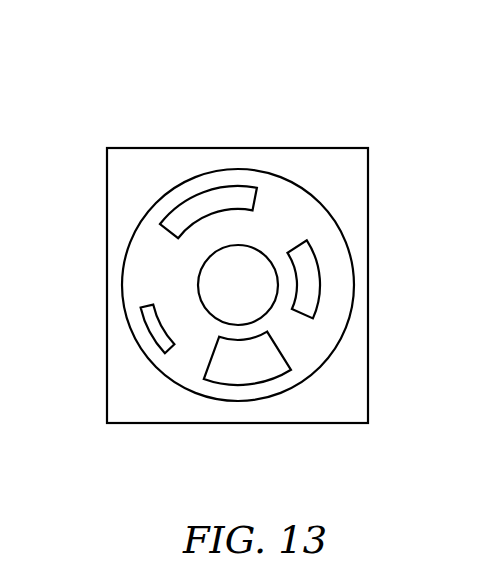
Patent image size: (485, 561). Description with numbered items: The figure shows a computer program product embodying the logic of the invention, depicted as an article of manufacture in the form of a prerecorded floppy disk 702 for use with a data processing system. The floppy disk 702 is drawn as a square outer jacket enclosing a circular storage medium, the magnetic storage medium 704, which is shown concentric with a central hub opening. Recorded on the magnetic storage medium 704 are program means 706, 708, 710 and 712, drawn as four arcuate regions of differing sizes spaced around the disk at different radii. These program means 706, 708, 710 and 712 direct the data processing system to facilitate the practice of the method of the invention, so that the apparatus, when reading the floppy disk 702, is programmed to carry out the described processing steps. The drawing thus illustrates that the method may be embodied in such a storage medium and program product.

The prerecorded floppy disk 702 is at (258, 133).
The magnetic storage medium 704 is at (155, 268).
The program means 706 is at (153, 335).
The program means 708 is at (248, 372).
The program means 710 is at (315, 273).
The program means 712 is at (202, 190).